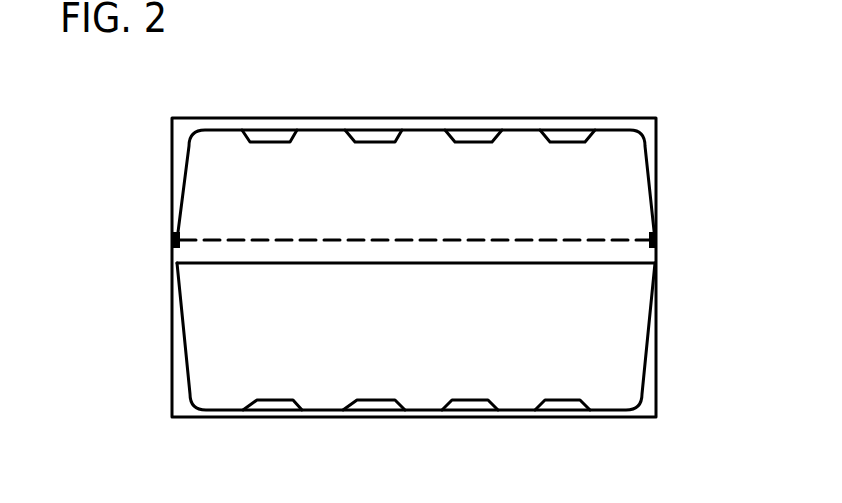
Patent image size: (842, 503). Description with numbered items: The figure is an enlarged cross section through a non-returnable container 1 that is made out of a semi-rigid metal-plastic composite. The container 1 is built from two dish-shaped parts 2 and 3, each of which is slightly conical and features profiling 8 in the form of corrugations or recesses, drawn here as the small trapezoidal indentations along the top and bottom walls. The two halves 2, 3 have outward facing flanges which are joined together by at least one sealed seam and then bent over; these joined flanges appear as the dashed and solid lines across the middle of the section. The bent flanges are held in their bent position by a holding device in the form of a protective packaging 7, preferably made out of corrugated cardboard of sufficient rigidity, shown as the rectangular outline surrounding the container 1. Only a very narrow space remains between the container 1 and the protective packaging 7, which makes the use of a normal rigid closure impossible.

The non-returnable container 1 is at (648, 160).
The dish-shaped part 2 is at (431, 385).
The dish-shaped part 3 is at (407, 165).
The protective packaging 7 is at (572, 129).
The profiling 8 is at (270, 136).